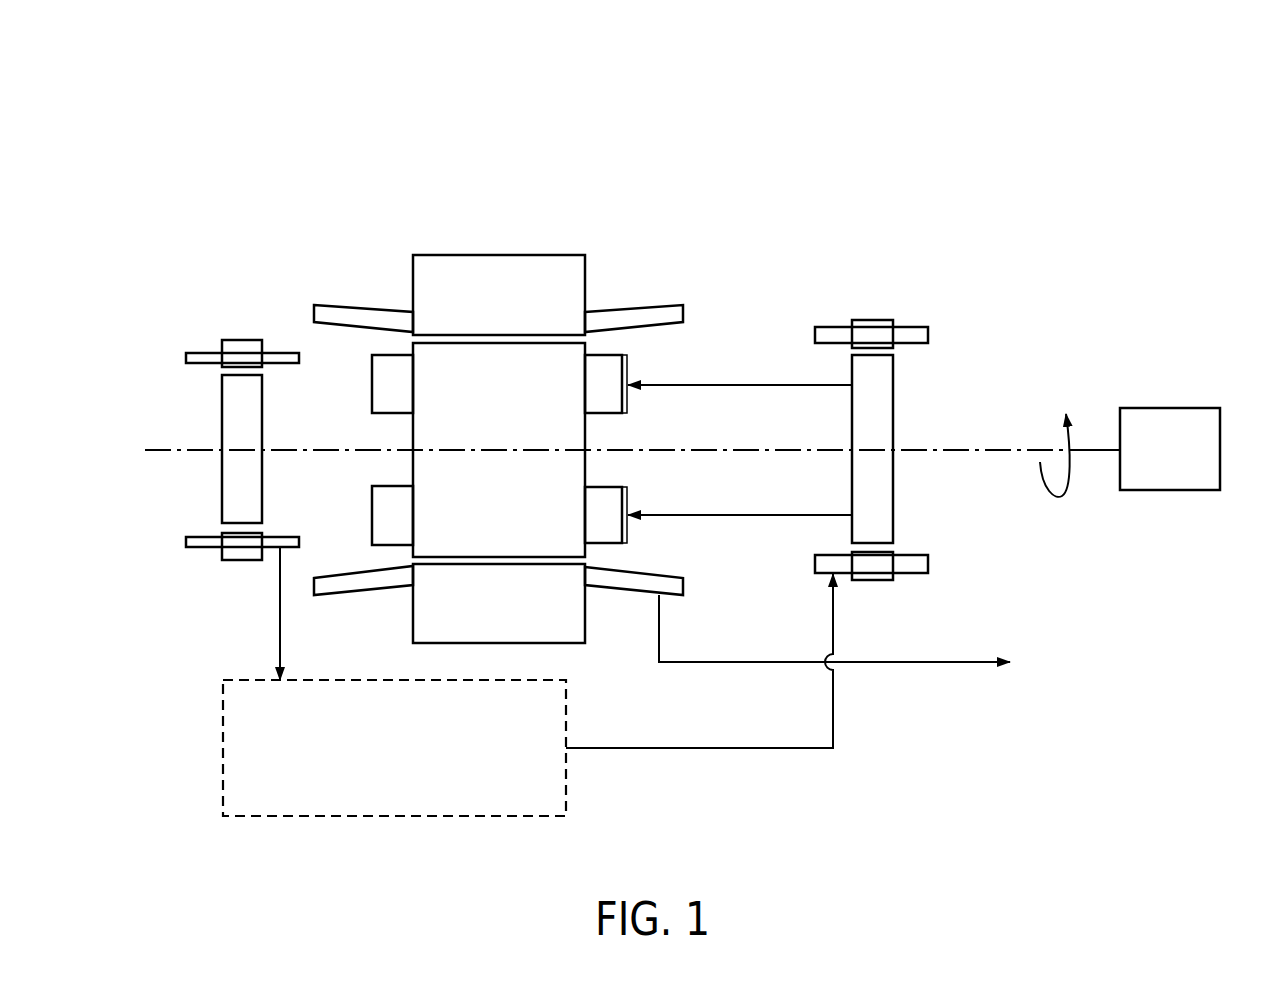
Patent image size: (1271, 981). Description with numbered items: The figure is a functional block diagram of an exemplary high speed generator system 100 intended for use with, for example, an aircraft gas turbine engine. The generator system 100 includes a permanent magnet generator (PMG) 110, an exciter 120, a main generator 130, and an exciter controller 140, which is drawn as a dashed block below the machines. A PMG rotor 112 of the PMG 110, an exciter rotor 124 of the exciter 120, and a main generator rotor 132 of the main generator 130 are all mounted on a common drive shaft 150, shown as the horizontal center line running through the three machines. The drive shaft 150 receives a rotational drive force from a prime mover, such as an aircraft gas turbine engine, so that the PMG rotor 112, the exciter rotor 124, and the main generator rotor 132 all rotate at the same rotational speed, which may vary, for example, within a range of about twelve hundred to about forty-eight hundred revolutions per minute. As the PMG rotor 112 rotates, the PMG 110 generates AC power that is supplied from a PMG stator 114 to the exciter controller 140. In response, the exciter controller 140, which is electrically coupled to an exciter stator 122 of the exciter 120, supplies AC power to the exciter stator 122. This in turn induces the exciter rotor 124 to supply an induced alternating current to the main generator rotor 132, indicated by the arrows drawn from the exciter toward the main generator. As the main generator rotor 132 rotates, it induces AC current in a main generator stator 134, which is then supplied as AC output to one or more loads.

The high speed generator system 100 is at (682, 421).
The permanent magnet generator (PMG) 110 is at (224, 317).
The PMG rotor 112 is at (221, 484).
The PMG stator 114 is at (196, 367).
The exciter 120 is at (909, 379).
The exciter stator 122 is at (930, 569).
The exciter rotor 124 is at (895, 398).
The main generator 130 is at (498, 369).
The main generator rotor 132 is at (590, 444).
The main generator stator 134 is at (587, 620).
The exciter controller 140 is at (233, 678).
The common drive shaft 150 is at (1000, 450).